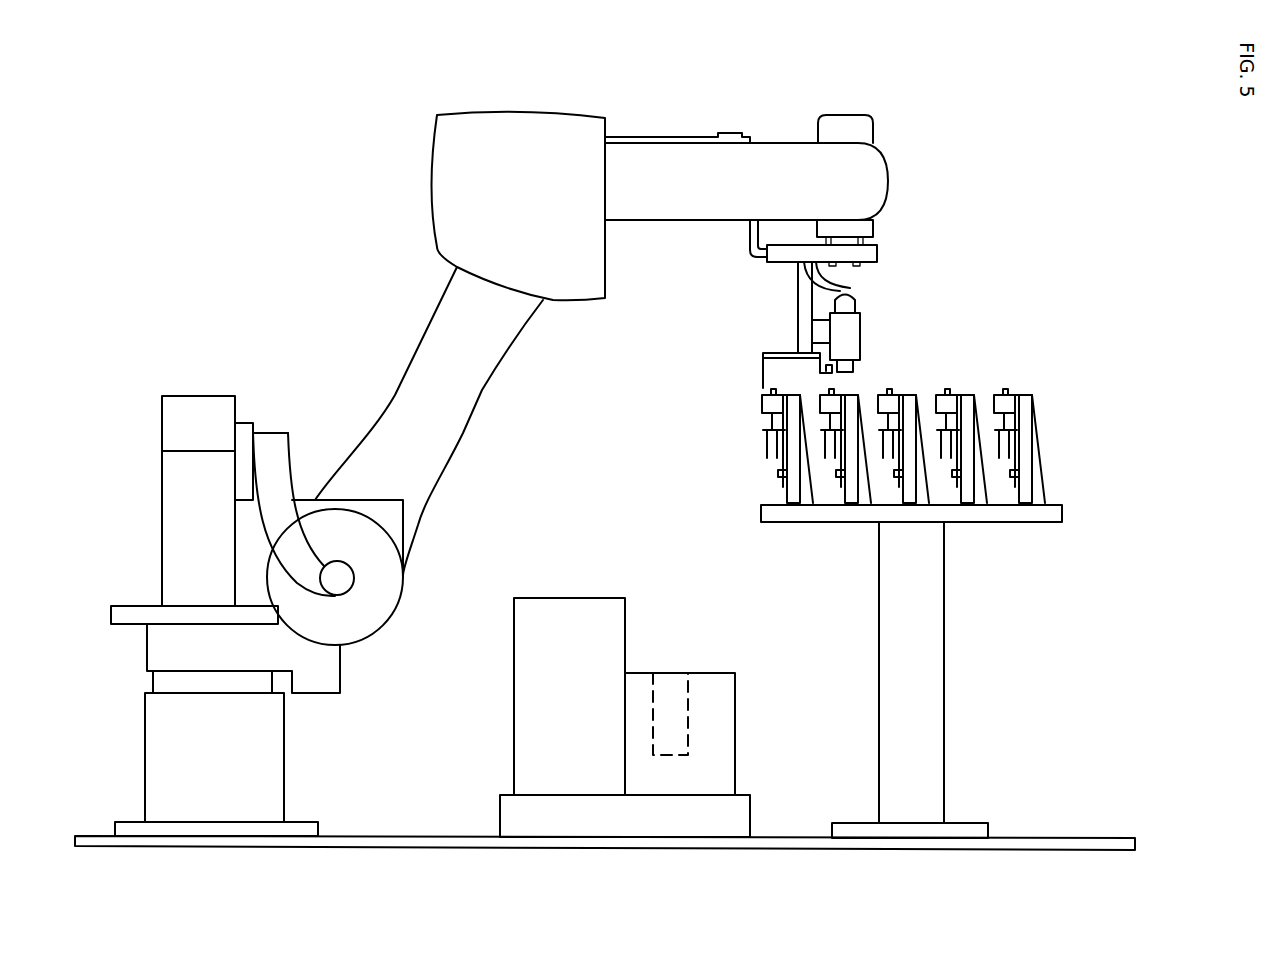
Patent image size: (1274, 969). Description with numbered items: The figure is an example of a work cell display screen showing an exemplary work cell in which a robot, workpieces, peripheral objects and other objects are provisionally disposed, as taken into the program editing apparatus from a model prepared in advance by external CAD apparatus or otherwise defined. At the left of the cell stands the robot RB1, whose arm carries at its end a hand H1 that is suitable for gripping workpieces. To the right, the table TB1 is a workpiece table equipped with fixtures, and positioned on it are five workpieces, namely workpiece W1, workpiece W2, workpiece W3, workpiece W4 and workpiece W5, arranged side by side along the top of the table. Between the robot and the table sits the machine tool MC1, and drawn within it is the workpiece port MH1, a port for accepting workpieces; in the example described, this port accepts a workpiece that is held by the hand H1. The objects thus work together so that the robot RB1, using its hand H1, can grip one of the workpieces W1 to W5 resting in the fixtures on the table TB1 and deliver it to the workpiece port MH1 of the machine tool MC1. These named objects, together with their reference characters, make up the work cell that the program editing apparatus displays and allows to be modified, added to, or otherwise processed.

The robot 1 RB1 is at (352, 385).
The hand H1 is at (767, 372).
The workpiece 1 W1 is at (796, 503).
The workpiece 2 W2 is at (851, 503).
The workpiece 3 W3 is at (911, 398).
The workpiece 4 W4 is at (966, 503).
The workpiece 5 W5 is at (1026, 503).
The machine tool 1 MC1 is at (570, 592).
The workpiece port 1 MH1 is at (673, 711).
The table 1 TB1 is at (952, 706).